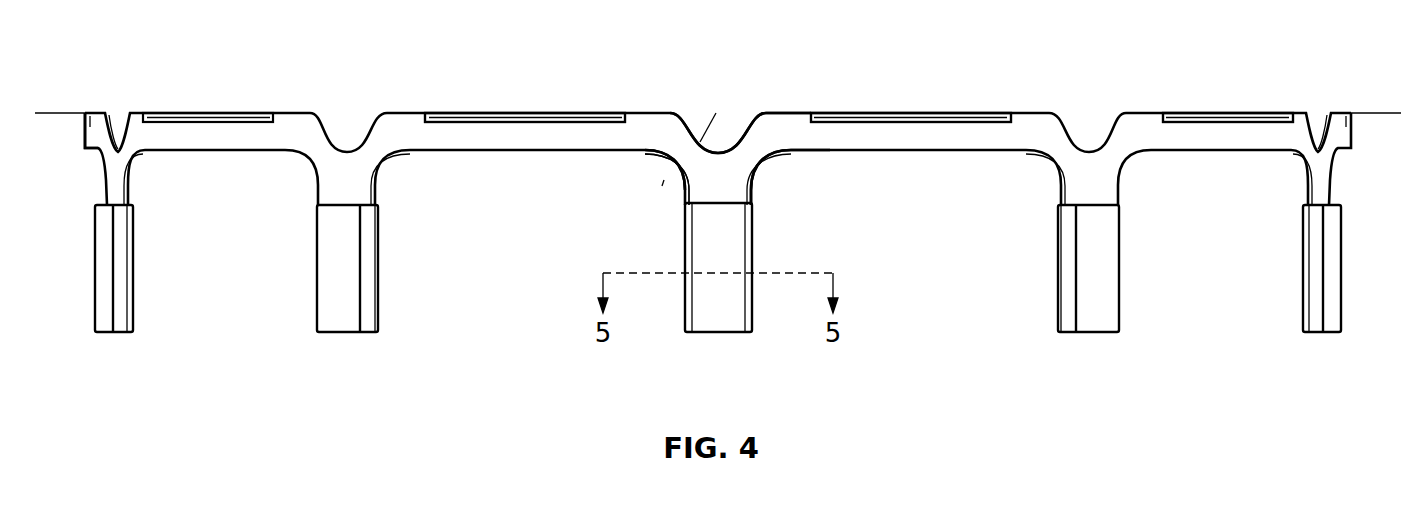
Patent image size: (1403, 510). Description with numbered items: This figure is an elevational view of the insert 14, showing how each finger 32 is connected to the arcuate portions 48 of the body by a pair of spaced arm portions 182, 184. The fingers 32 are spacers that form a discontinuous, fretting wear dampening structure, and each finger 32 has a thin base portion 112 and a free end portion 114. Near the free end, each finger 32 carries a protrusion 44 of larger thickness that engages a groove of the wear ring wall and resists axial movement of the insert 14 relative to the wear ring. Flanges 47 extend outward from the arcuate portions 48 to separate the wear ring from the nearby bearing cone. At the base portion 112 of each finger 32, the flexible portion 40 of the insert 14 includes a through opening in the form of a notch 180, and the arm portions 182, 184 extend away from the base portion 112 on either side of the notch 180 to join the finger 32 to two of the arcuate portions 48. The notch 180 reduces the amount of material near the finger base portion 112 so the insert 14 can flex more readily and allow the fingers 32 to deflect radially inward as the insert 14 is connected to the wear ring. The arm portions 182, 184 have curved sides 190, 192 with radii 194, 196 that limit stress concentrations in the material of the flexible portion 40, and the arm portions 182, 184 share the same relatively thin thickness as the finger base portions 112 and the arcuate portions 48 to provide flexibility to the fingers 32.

The insert 14 is at (1215, 135).
The finger 32 is at (730, 317).
The flexible portion 40 is at (770, 104).
The protrusion 44 is at (700, 307).
The flange 47 is at (48, 112).
The arcuate portion 48 is at (490, 136).
The base portion 112 is at (745, 190).
The free end portion 114 is at (743, 332).
The notch 180 is at (742, 132).
The arm portion 182 is at (672, 152).
The arm portion 184 is at (758, 150).
The curved side 190 is at (690, 140).
The curved side 192 is at (678, 158).
The radius 194 is at (702, 138).
The radius 196 is at (662, 186).